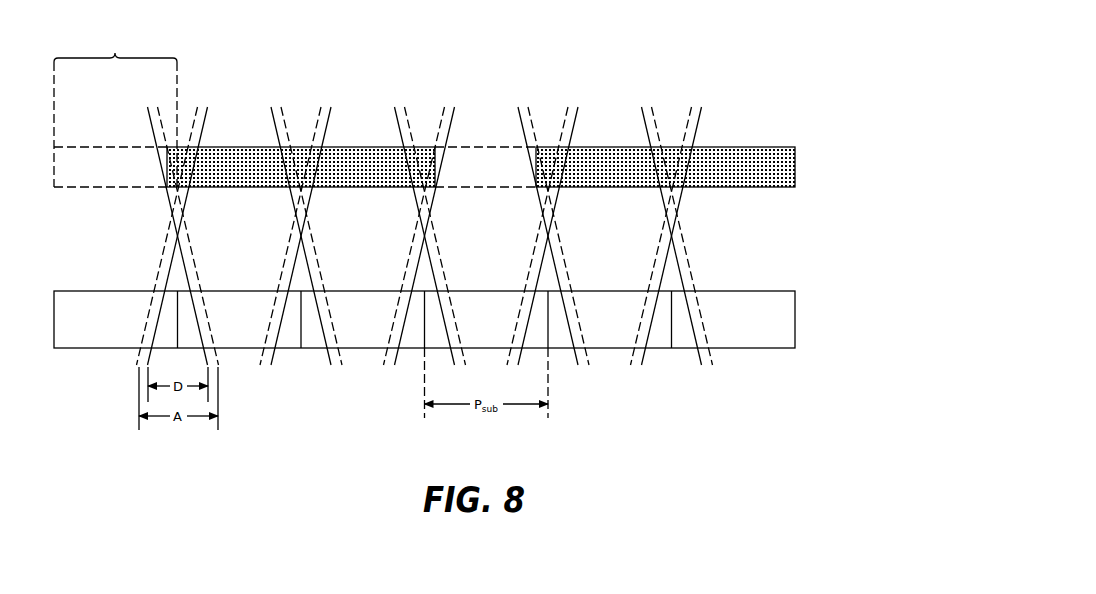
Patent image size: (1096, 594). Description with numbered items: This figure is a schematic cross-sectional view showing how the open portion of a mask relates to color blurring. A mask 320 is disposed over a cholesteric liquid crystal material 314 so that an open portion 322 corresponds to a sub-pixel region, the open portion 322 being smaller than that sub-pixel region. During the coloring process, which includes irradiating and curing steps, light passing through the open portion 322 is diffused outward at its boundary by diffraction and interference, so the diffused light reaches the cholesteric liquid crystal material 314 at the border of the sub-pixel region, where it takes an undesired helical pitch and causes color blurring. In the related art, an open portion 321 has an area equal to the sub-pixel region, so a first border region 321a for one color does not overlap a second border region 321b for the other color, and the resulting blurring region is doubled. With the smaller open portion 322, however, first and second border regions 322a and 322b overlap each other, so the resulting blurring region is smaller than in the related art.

The cholesteric liquid crystal material 314 is at (780, 318).
The mask 320 is at (810, 163).
The open portion 321 is at (115, 108).
The first border region 321a is at (556, 285).
The second border region 321b is at (536, 285).
The open portion 322 is at (110, 165).
The first border region 322a is at (426, 289).
The second border region 322b is at (408, 236).